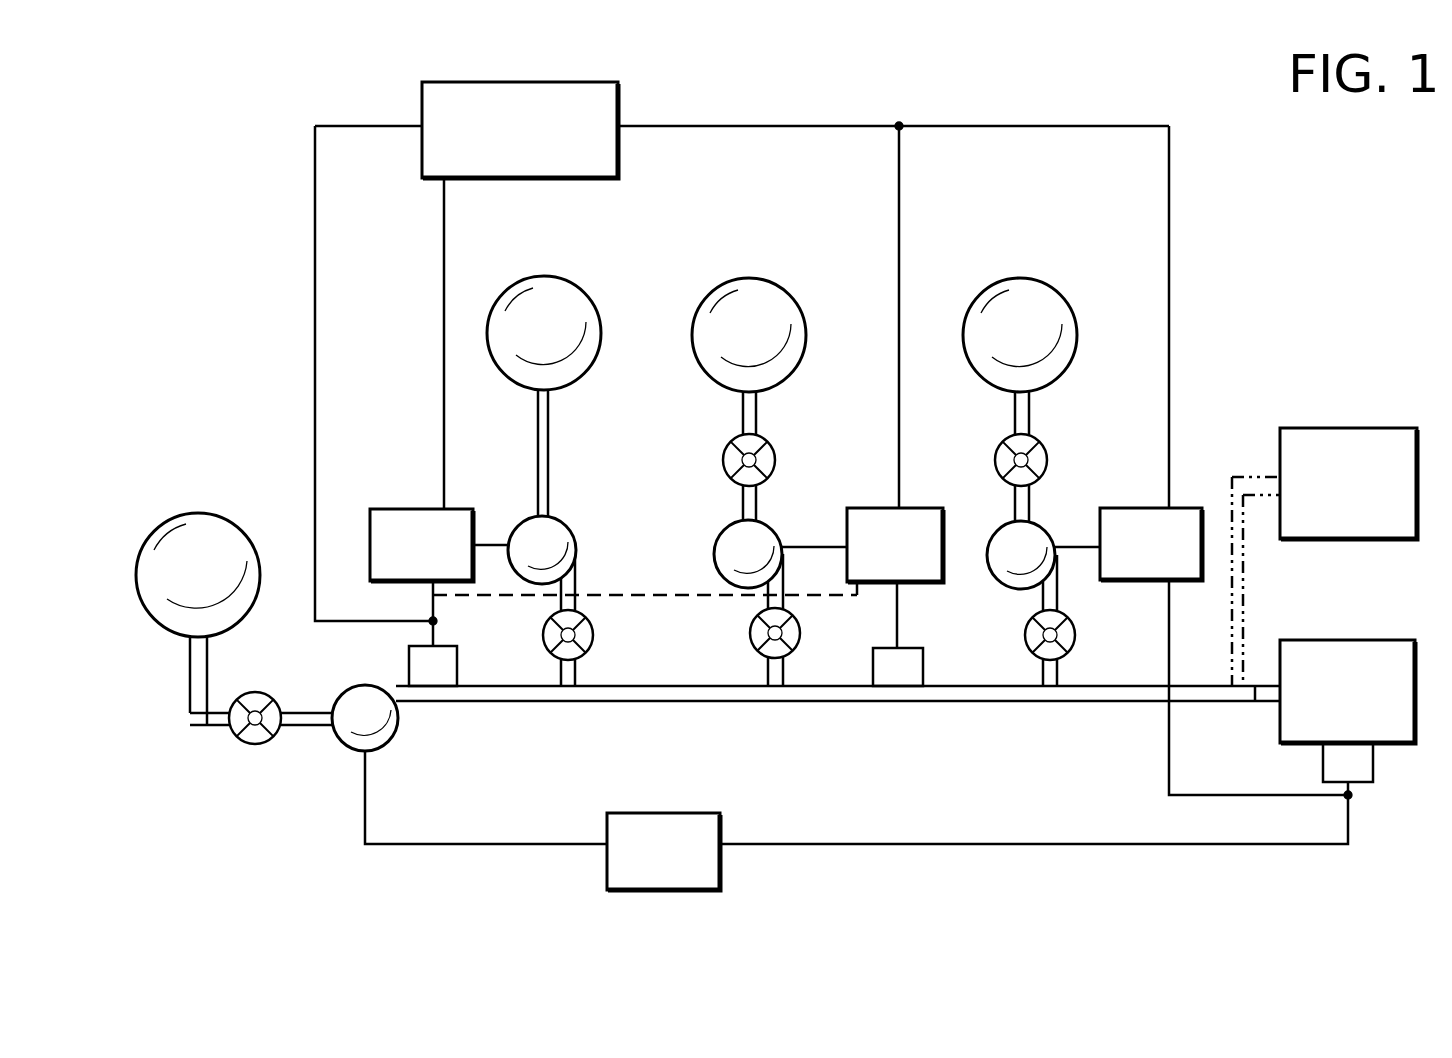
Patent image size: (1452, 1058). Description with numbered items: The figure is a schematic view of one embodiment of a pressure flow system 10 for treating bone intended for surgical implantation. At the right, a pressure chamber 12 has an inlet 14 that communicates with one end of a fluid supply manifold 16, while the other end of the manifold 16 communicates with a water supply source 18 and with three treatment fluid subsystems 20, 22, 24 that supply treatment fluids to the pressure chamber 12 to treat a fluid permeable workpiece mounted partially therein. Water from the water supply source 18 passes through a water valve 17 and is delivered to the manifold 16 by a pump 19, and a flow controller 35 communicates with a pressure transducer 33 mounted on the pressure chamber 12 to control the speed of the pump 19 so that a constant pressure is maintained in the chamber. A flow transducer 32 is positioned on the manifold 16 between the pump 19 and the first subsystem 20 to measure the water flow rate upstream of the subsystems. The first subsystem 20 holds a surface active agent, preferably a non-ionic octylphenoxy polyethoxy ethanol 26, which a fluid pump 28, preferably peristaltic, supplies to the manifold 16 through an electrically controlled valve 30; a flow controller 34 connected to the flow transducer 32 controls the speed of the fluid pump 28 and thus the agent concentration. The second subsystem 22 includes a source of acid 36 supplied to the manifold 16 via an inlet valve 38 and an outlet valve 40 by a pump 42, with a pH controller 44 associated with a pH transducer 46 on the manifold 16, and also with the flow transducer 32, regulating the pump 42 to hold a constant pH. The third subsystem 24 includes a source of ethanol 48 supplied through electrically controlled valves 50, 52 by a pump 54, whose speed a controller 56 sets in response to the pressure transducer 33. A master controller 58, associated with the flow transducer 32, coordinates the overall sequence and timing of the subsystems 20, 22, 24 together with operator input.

The pressure flow system 10 is at (262, 243).
The pressure chamber 12 is at (1365, 442).
The inlet 14 is at (1252, 478).
The fluid supply manifold 16 is at (690, 694).
The water valve 17 is at (245, 745).
The water supply source 18 is at (208, 535).
The pump 19 is at (355, 748).
The treatment fluid subsystem 20 is at (551, 458).
The treatment fluid subsystem 22 is at (755, 458).
The treatment fluid subsystem 24 is at (1028, 459).
The non-ionic octylphenoxy polyethoxy ethanol 26 is at (520, 312).
The fluid pump 28 is at (578, 550).
The electrically controlled valve 30 is at (545, 640).
The flow transducer 32 is at (412, 668).
The pressure transducer 33 is at (1368, 770).
The flow controller 34 is at (388, 520).
The flow controller 35 is at (698, 872).
The source of acid 36 is at (712, 314).
The inlet valve 38 is at (726, 456).
The outlet valve 40 is at (750, 640).
The pump 42 is at (631, 520).
The pH controller 44 is at (865, 520).
The pH transducer 46 is at (876, 672).
The source of ethanol 48 is at (990, 314).
The electrically controlled valve 50 is at (998, 455).
The electrically controlled valve 52 is at (1025, 637).
The pump 54 is at (995, 555).
The controller 56 is at (1137, 522).
The master controller 58 is at (585, 100).